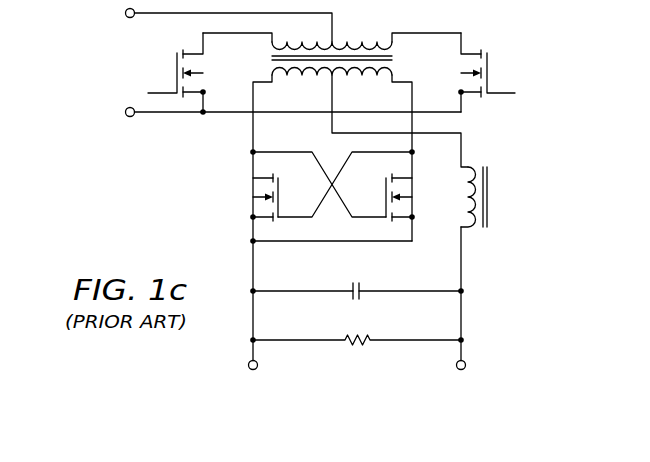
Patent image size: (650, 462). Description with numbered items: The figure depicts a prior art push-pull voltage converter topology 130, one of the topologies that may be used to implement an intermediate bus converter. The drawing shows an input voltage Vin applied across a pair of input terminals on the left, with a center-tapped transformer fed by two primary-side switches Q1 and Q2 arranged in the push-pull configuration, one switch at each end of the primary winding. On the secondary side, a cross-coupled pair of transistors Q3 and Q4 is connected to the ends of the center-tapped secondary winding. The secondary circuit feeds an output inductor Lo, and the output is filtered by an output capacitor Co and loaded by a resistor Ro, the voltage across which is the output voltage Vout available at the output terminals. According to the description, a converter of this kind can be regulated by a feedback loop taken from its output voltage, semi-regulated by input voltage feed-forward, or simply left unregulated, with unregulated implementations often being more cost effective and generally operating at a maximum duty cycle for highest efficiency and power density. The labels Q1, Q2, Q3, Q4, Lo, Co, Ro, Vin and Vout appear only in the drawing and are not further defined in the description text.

The push-pull voltage converter topology 130 is at (550, 131).
The primary switch transistor Q1 is at (188, 74).
The primary switch transistor Q2 is at (474, 72).
The synchronous rectifier transistor Q3 is at (252, 197).
The synchronous rectifier transistor Q4 is at (412, 197).
The output inductor Lo is at (487, 197).
The output capacitor Co is at (357, 280).
The load resistor Ro is at (357, 329).
The input voltage Vin is at (98, 10).
The output voltage Vout is at (466, 388).